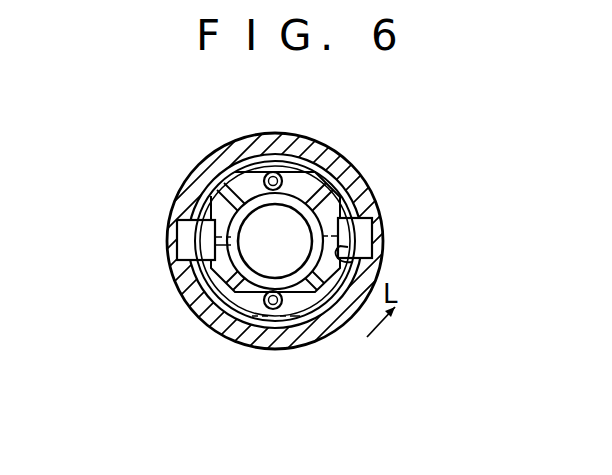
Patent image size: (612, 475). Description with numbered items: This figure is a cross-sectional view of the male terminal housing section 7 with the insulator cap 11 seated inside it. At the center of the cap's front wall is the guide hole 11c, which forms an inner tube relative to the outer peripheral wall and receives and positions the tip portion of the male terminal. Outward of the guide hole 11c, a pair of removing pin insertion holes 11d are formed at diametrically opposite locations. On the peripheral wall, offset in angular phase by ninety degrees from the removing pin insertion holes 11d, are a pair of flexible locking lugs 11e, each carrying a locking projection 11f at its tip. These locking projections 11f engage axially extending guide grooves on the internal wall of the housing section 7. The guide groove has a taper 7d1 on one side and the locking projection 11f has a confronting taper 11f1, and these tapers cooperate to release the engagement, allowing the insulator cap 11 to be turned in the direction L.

The male terminal housing section 7 is at (197, 170).
The taper 7d1 is at (183, 242).
The insulator cap 11 is at (337, 208).
The guide hole 11c is at (267, 224).
The removing pin insertion holes 11d is at (273, 312).
The flexible locking lugs 11e is at (331, 248).
The locking projection 11f is at (378, 248).
The taper 11f1 is at (376, 219).